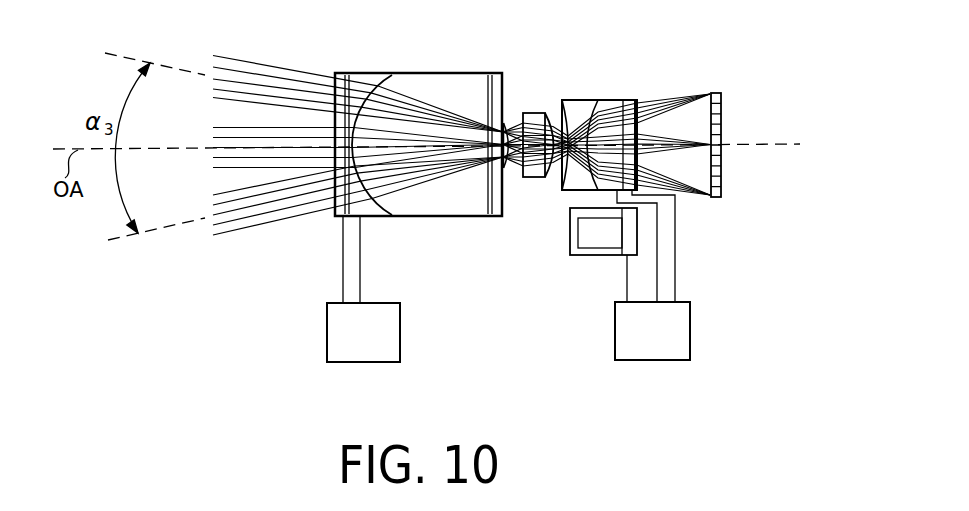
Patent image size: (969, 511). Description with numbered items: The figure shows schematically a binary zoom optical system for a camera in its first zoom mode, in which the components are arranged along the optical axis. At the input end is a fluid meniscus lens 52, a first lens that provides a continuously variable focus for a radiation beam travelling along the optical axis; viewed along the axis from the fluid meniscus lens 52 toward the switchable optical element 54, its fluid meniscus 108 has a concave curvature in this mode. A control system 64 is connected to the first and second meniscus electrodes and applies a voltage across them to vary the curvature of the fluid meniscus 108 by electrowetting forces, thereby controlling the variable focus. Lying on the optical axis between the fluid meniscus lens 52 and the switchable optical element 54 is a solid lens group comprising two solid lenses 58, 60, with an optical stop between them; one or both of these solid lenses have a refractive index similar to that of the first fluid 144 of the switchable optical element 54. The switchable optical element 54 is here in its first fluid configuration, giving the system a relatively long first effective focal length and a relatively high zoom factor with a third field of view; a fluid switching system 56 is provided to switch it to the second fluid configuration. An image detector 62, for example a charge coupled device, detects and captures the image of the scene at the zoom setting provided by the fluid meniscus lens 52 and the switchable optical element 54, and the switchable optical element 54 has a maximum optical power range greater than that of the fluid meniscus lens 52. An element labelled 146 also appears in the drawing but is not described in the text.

The fluid meniscus lens 52 is at (452, 73).
The fluid meniscus 108 is at (381, 81).
The solid lens 60 is at (511, 121).
The solid lens 58 is at (532, 112).
The switchable optical element 54 is at (575, 100).
The first fluid 144 is at (613, 100).
The image detector 62 is at (715, 92).
The control system 64 is at (401, 330).
The sensor 146 is at (596, 238).
The fluid switching system 56 is at (615, 332).